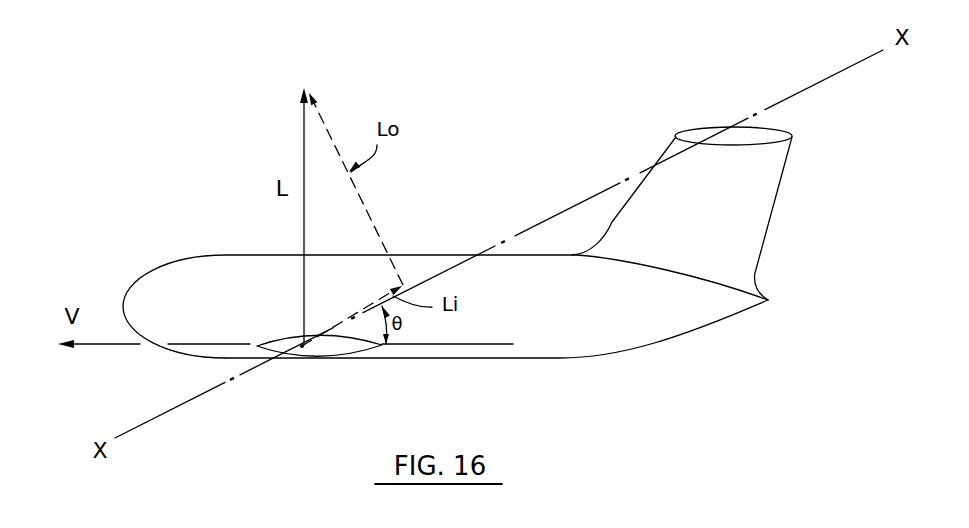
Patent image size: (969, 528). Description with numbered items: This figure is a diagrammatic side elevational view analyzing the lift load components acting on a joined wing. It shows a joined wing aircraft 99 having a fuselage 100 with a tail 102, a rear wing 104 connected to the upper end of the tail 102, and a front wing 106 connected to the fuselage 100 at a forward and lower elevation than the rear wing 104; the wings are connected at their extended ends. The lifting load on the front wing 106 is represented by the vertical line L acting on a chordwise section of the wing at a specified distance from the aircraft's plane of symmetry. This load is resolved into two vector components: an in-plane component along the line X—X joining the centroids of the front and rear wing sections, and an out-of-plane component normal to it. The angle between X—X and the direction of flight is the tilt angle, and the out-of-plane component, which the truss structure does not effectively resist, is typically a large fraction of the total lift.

The joined wing aircraft 99 is at (449, 251).
The fuselage 100 is at (376, 360).
The tail 102 is at (763, 183).
The rear wing 104 is at (697, 132).
The front wing 106 is at (318, 352).